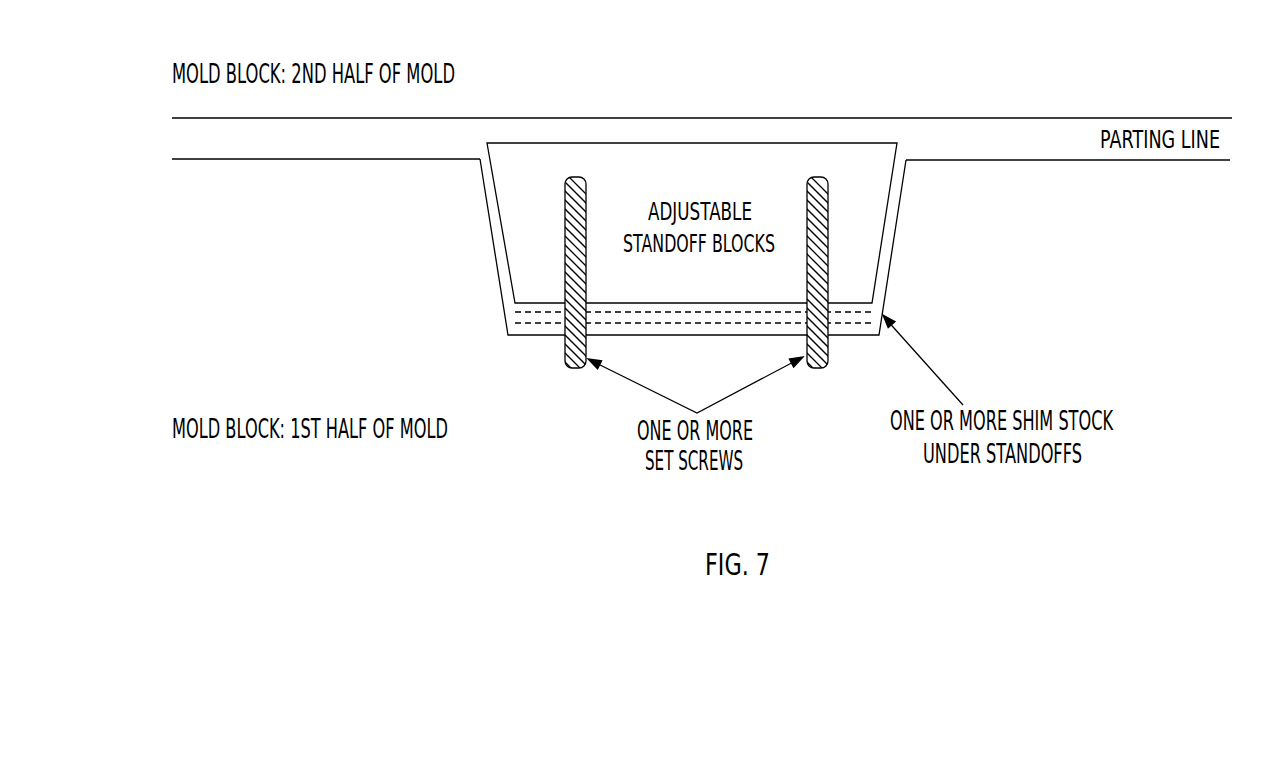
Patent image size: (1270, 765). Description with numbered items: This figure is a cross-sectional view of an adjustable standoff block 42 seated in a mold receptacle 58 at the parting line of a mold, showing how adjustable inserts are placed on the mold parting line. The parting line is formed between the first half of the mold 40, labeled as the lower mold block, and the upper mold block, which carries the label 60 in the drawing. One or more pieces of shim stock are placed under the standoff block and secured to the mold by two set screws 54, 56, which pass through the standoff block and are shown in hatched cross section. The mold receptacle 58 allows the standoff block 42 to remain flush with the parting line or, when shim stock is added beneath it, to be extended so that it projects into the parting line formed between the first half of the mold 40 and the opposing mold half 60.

The first half of the mold 40 is at (938, 498).
The second mold half 60 is at (984, 135).
The adjustable standoff block 42 is at (865, 153).
The mold receptacle 58 is at (482, 171).
The set screw 54 is at (571, 177).
The set screw 56 is at (815, 177).